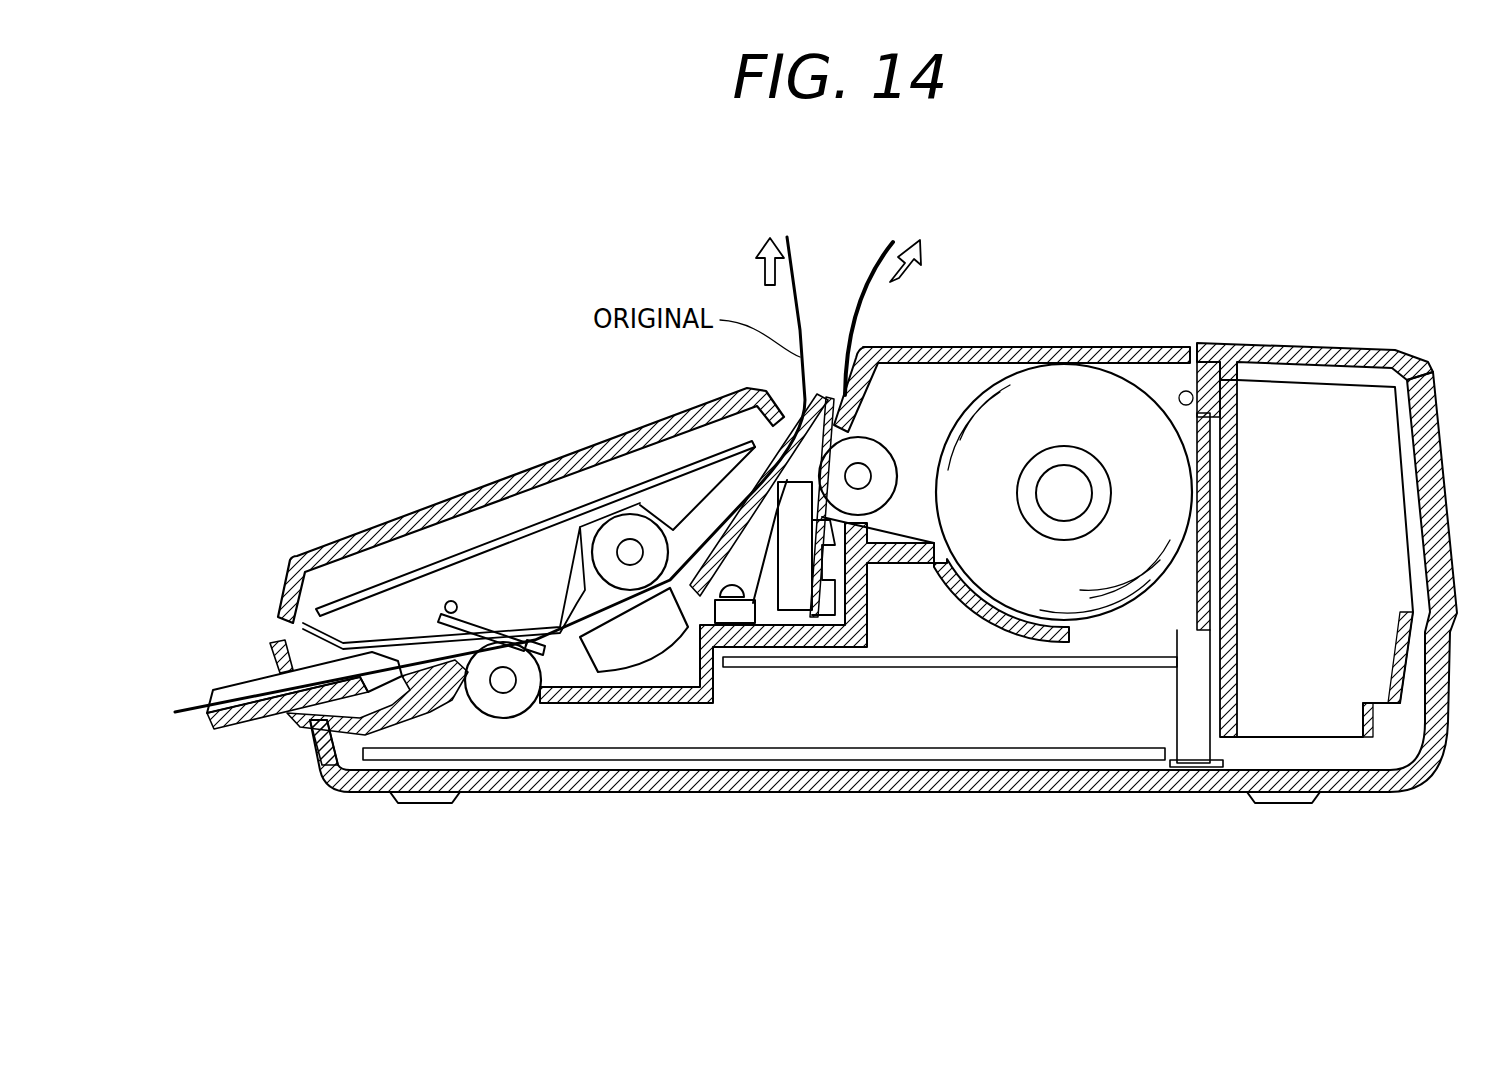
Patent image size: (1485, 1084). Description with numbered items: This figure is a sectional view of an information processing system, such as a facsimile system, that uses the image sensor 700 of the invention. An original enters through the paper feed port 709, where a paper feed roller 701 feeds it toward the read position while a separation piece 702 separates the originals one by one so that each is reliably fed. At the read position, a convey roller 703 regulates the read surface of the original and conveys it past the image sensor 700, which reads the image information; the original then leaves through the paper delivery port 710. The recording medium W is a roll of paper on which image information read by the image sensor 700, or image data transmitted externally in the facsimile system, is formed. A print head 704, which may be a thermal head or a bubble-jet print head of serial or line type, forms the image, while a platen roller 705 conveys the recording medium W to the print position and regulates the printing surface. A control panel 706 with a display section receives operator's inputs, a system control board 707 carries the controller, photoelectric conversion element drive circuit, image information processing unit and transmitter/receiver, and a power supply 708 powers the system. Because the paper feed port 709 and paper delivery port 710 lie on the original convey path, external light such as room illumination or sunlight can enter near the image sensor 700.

The image sensor 700 is at (635, 650).
The paper feed roller 701 is at (503, 712).
The separation piece 702 is at (490, 630).
The convey roller 703 is at (621, 523).
The print head 704 is at (797, 597).
The platen roller 705 is at (878, 463).
The control panel 706 is at (388, 523).
The system control board 707 is at (980, 757).
The power supply 708 is at (1335, 395).
The paper feed port 709 is at (258, 630).
The paper delivery port 710 is at (765, 303).
The recording medium W is at (1110, 385).